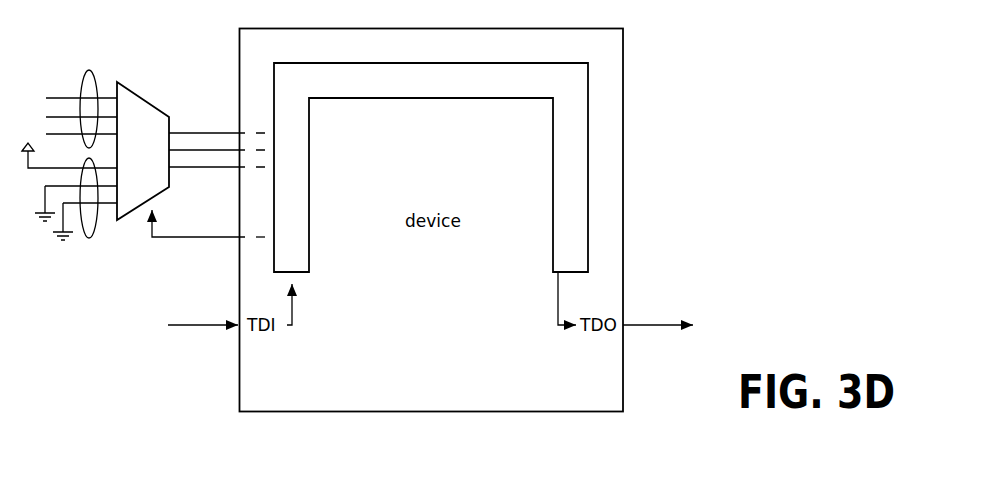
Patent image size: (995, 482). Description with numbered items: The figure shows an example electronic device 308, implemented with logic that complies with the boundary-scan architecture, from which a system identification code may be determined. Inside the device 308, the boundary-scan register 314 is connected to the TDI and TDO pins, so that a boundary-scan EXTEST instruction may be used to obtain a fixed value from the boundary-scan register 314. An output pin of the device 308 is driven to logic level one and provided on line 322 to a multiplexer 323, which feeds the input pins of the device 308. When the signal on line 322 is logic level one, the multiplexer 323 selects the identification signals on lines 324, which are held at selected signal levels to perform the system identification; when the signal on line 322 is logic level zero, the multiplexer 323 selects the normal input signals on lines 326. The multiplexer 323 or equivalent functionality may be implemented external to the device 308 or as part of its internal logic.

The device 308 is at (483, 28).
The boundary-scan register 314 is at (433, 98).
The line 322 is at (222, 237).
The multiplexer 323 is at (150, 103).
The lines 324 is at (89, 238).
The lines 326 is at (89, 70).